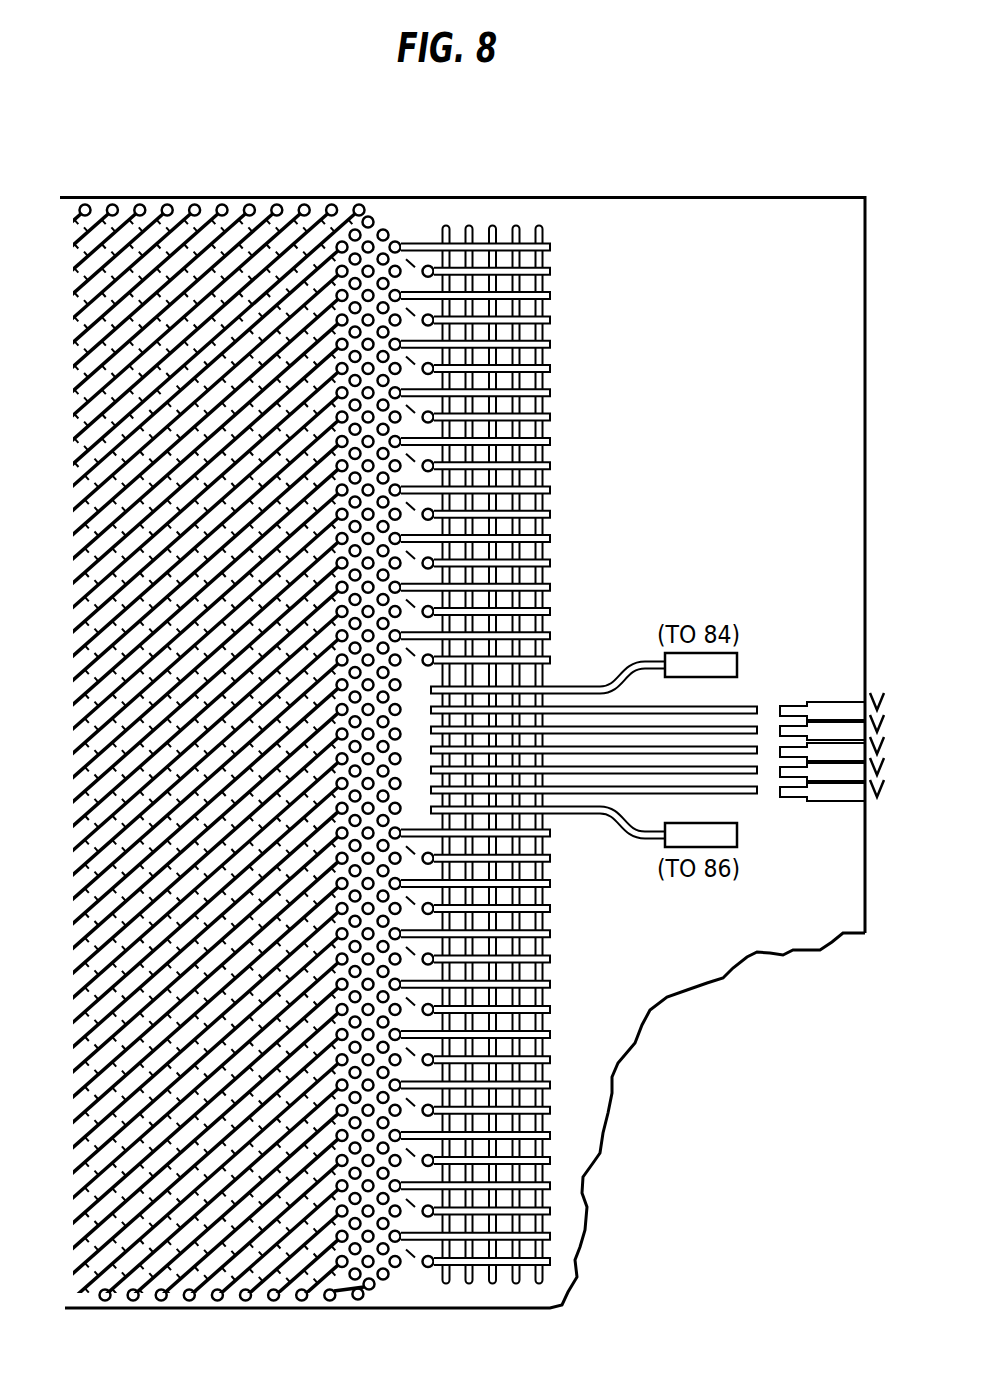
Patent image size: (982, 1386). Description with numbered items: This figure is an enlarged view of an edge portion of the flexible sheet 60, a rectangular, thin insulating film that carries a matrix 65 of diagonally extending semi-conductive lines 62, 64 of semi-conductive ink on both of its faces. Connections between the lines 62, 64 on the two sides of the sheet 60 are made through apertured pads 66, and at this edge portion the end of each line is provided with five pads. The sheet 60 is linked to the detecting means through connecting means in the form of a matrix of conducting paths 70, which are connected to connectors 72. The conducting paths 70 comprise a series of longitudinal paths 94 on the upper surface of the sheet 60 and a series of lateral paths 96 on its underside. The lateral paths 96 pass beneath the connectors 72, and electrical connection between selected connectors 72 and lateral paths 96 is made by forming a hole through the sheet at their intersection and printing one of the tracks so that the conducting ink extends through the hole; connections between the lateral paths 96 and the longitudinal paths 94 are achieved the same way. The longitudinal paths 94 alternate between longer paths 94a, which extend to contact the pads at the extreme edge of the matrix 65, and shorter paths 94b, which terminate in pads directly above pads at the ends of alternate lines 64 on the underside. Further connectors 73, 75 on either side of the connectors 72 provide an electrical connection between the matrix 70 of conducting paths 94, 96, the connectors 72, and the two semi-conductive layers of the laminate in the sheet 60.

The flexible sheet 60 is at (618, 187).
The semi-conductive lines 62 is at (232, 204).
The semi-conductive lines 64 is at (294, 201).
The matrix 65 is at (366, 185).
The pads 66 is at (188, 204).
The matrix of conducting paths 70 is at (620, 418).
The connectors 72 is at (749, 686).
The further connector 73 is at (618, 672).
The further connector 75 is at (617, 827).
The longitudinal paths 94 is at (522, 757).
The longer paths 94a is at (552, 442).
The shorter paths 94b is at (554, 464).
The lateral paths 96 is at (558, 350).